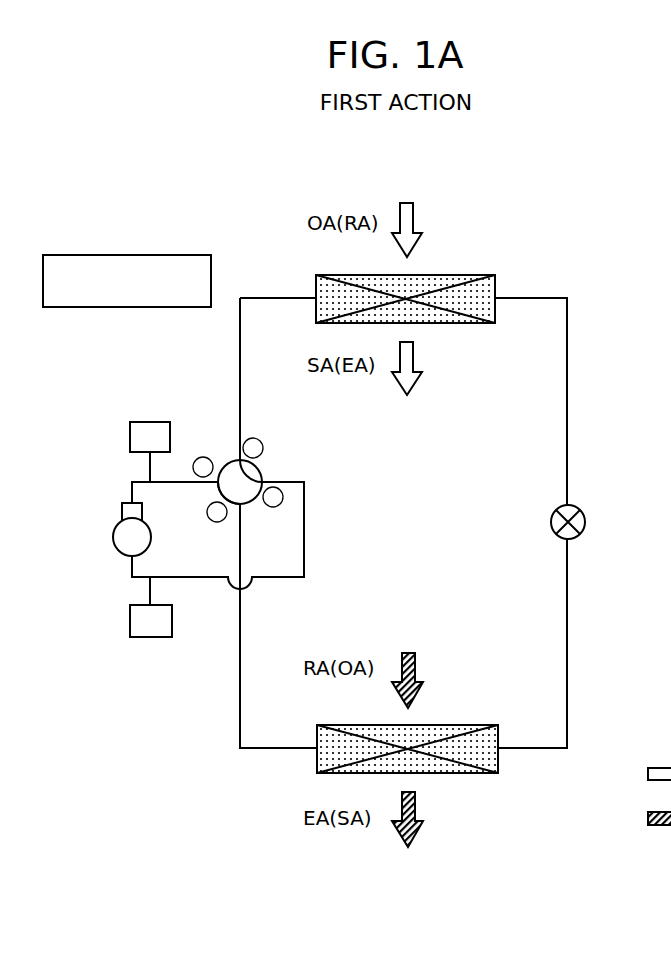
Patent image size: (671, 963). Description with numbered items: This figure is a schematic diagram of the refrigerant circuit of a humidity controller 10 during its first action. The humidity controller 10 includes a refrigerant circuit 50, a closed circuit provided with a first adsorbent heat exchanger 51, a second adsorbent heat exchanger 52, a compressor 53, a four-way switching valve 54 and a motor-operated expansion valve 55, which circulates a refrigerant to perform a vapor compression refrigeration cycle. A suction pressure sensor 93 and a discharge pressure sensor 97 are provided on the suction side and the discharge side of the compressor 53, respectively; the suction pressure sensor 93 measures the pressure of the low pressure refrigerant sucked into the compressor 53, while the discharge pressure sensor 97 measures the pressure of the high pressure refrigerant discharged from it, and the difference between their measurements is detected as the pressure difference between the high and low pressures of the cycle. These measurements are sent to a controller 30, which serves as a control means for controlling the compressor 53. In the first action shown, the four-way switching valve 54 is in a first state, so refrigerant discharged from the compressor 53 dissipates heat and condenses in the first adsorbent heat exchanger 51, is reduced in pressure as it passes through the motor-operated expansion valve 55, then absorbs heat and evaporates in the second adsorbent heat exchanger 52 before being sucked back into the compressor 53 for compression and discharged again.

The humidity controller 10 is at (187, 213).
The controller 30 is at (100, 255).
The refrigerant circuit 50 is at (569, 398).
The first adsorbent heat exchanger 51 is at (472, 773).
The second adsorbent heat exchanger 52 is at (470, 273).
The compressor 53 is at (112, 532).
The four-way switching valve 54 is at (262, 470).
The motor-operated expansion valve 55 is at (583, 530).
The suction pressure sensor 93 is at (150, 640).
The discharge pressure sensor 97 is at (150, 420).